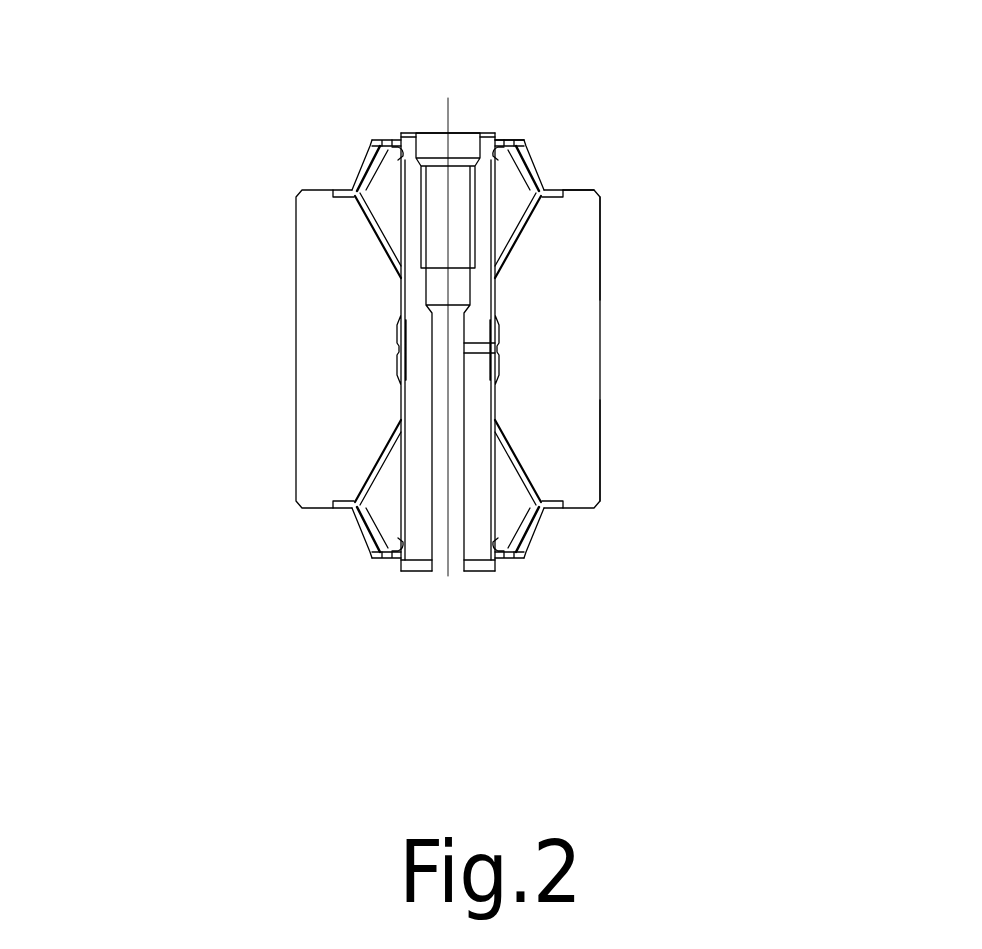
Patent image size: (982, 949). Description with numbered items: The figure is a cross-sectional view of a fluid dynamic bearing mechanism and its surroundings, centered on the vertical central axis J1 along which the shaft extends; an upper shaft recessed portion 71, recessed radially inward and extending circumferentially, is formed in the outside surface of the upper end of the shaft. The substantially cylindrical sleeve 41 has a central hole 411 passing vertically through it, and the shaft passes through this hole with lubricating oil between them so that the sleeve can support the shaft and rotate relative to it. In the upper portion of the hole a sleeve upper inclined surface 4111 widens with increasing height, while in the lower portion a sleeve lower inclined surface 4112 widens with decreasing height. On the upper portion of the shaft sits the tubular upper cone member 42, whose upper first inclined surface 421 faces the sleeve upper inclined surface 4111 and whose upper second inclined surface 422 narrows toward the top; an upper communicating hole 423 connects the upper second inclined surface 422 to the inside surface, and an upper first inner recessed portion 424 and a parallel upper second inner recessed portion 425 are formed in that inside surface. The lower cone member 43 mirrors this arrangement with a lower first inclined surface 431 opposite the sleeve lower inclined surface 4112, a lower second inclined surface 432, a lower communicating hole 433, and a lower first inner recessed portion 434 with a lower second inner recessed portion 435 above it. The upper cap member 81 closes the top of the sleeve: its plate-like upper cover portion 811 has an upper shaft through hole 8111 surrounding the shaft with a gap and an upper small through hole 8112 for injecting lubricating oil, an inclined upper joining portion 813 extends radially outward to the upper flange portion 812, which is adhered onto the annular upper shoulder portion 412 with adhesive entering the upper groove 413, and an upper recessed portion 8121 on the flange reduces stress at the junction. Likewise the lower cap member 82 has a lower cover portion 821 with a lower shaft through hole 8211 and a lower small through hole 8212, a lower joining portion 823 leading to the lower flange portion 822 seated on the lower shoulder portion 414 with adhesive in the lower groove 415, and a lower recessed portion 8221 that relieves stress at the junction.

The central axis J1 is at (450, 106).
The upper shaft recessed portion 71 is at (492, 147).
The sleeve 41 is at (587, 300).
The central hole 411 is at (503, 405).
The sleeve upper inclined surface 4111 is at (525, 228).
The sleeve lower inclined surface 4112 is at (533, 482).
The upper shoulder portion 412 is at (305, 188).
The upper groove 413 is at (330, 198).
The lower shoulder portion 414 is at (343, 513).
The lower groove 415 is at (333, 503).
The upper cone member 42 is at (525, 145).
The upper first inclined surface 421 is at (508, 190).
The upper second inclined surface 422 is at (520, 147).
The upper communicating hole 423 is at (530, 222).
The upper first inner recessed portion 424 is at (370, 205).
The upper second inner recessed portion 425 is at (380, 218).
The lower cone member 43 is at (503, 525).
The lower first inclined surface 431 is at (530, 525).
The lower second inclined surface 432 is at (515, 535).
The lower communicating hole 433 is at (513, 473).
The lower first inner recessed portion 434 is at (367, 547).
The lower second inner recessed portion 435 is at (362, 474).
The upper cap member 81 is at (368, 157).
The upper cover portion 811 is at (402, 130).
The upper shaft through hole 8111 is at (498, 140).
The upper small through hole 8112 is at (388, 138).
The upper flange portion 812 is at (347, 195).
The upper recessed portion 8121 is at (348, 188).
The upper joining portion 813 is at (360, 187).
The lower cap member 82 is at (508, 560).
The lower cover portion 821 is at (400, 567).
The lower shaft through hole 8211 is at (495, 547).
The lower small through hole 8212 is at (388, 563).
The lower flange portion 822 is at (563, 507).
The lower recessed portion 8221 is at (342, 519).
The lower joining portion 823 is at (372, 558).